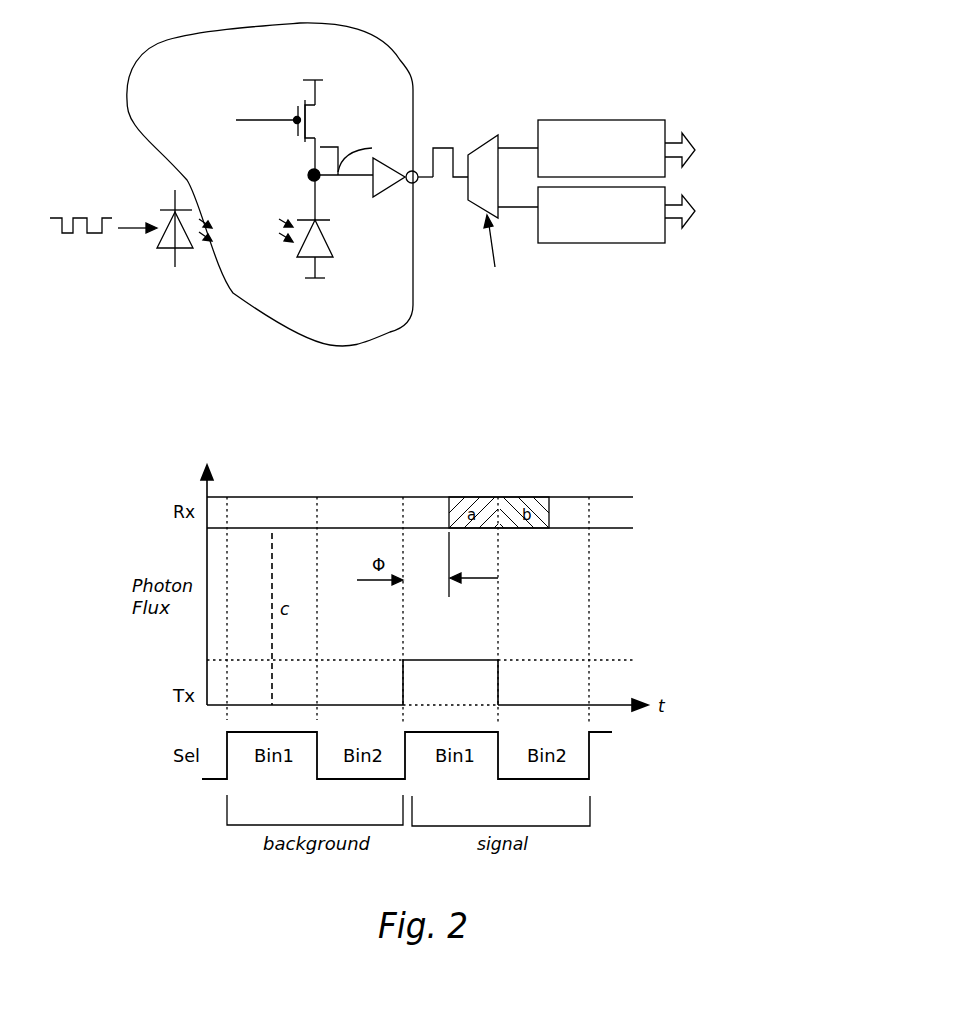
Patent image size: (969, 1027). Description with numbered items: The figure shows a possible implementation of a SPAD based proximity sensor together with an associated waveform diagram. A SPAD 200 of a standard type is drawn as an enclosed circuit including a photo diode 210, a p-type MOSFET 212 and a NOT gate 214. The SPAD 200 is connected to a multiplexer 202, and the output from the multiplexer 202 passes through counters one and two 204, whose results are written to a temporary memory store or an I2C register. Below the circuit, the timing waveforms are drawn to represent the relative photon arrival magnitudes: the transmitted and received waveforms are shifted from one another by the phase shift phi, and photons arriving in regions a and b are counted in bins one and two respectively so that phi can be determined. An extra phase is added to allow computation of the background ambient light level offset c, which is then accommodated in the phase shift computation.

The SPAD 200 is at (424, 62).
The multiplexer 202 is at (500, 211).
The counters 1 and 2 204 is at (627, 120).
The photo diode 210 is at (303, 260).
The p-type MOSFET 212 is at (297, 115).
The NOT gate 214 is at (408, 183).